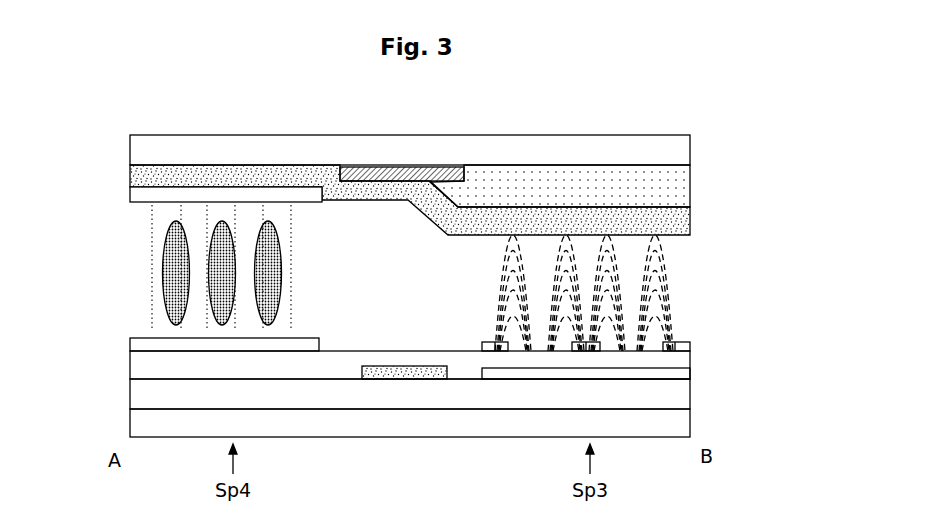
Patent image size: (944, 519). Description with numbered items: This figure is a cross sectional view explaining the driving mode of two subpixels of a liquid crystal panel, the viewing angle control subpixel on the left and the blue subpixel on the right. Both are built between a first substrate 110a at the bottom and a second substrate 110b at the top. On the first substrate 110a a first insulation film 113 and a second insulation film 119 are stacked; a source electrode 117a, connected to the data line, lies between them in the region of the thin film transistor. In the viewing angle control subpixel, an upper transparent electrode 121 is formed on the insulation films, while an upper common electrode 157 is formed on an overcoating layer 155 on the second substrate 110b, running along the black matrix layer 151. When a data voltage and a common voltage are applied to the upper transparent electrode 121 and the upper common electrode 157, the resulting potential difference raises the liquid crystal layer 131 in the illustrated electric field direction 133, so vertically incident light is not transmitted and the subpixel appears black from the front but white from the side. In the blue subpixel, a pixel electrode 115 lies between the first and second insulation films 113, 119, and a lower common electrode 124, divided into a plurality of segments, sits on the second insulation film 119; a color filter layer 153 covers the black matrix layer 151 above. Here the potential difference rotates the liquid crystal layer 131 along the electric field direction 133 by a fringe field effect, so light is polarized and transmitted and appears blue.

The second substrate 110b is at (690, 152).
The color filter layer 153 is at (690, 184).
The overcoating layer 155 is at (690, 222).
The black matrix layer 151 is at (377, 167).
The upper common electrode 157 is at (130, 196).
The liquid crystal layer 131 is at (165, 272).
The upper transparent electrode 121 is at (130, 340).
The second insulation film 119 is at (133, 363).
The first insulation film 113 is at (133, 393).
The first substrate 110a is at (133, 423).
The source electrode 117a is at (395, 380).
The pixel electrode 115 is at (690, 372).
The lower common electrode 124 is at (690, 345).
The electric field direction 133 is at (673, 292).